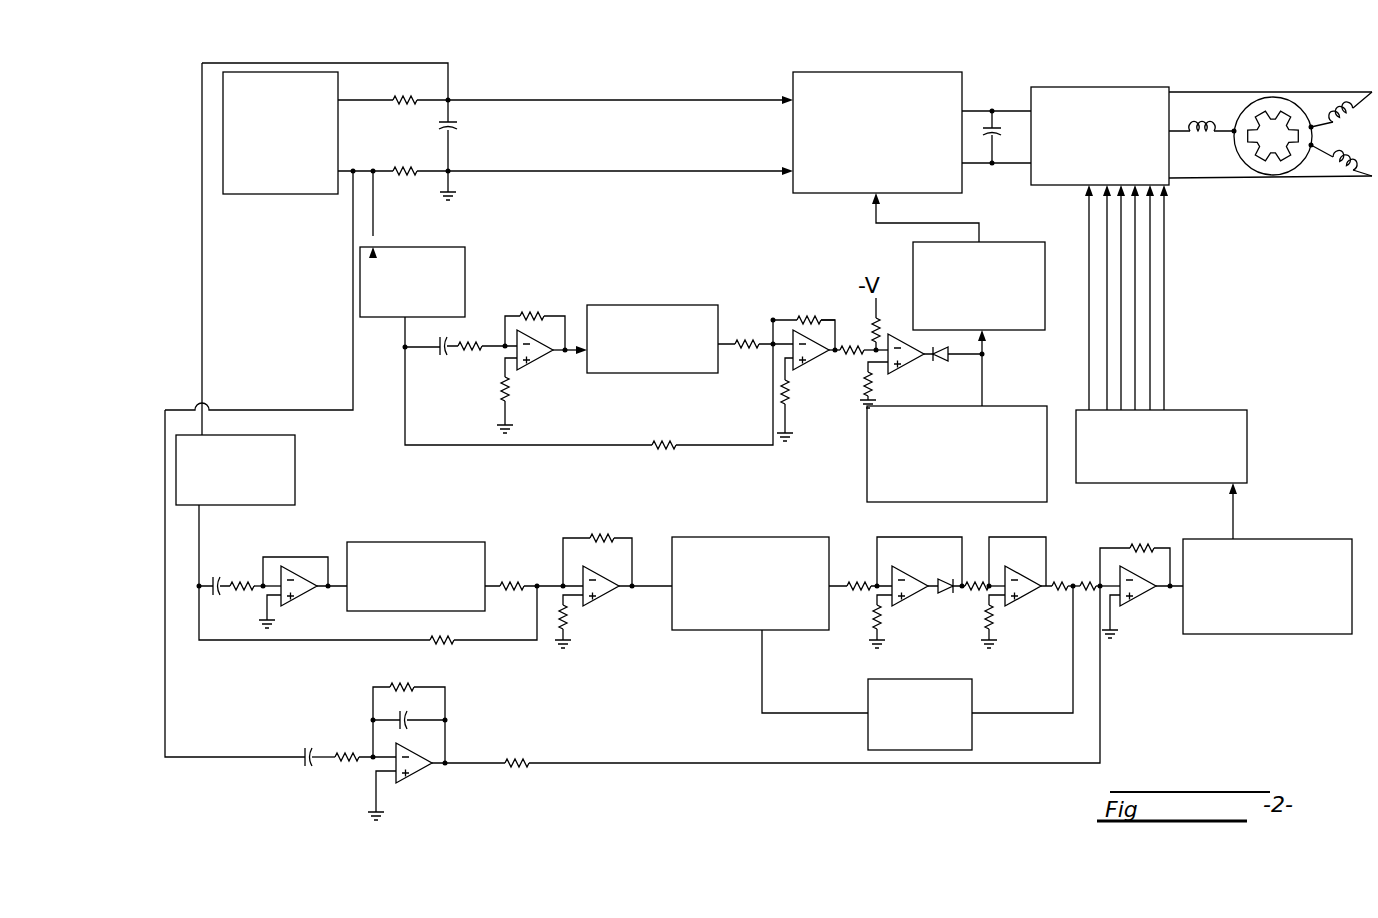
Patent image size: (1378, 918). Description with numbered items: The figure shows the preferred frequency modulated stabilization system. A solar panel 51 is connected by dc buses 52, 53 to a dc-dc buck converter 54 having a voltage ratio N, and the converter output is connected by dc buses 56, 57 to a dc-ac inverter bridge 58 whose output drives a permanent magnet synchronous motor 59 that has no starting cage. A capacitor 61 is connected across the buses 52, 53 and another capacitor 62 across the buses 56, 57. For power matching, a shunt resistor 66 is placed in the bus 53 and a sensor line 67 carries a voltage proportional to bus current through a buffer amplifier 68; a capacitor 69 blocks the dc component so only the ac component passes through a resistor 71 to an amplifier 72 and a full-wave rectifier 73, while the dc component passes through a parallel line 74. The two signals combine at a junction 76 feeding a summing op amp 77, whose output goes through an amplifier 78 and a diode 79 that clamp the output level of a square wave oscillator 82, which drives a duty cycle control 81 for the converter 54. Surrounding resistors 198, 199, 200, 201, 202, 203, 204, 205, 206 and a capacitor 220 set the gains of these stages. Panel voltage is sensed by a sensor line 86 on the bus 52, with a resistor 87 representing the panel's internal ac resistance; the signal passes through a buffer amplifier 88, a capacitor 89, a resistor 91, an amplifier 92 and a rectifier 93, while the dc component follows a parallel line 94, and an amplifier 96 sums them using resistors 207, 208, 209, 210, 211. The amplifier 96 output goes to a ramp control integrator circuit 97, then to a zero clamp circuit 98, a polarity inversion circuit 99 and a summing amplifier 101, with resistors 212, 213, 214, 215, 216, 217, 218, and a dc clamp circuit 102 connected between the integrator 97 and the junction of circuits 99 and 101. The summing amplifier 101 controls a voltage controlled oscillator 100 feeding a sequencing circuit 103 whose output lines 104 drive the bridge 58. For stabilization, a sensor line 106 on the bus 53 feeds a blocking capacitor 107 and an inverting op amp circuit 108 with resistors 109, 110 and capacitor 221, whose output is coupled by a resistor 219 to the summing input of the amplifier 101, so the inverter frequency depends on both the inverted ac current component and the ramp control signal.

The solar panel 51 is at (223, 130).
The dc bus 52 is at (488, 100).
The dc bus 53 is at (520, 171).
The dc-dc buck converter 54 is at (793, 86).
The dc bus 56 is at (1005, 111).
The dc bus 57 is at (1008, 163).
The dc-ac inverter bridge 58 is at (1120, 87).
The permanent magnet synchronous motor 59 is at (1276, 180).
The capacitor 61 is at (460, 132).
The capacitor 62 is at (980, 128).
The shunt resistor 66 is at (410, 167).
The sensor line 67 is at (376, 215).
The buffer amplifier 68 is at (465, 262).
The capacitor 69 is at (437, 348).
The resistor 71 is at (452, 356).
The amplifier 72 is at (535, 340).
The full-wave rectifier 73 is at (628, 305).
The parallel line 74 is at (520, 445).
The junction 76 is at (773, 346).
The summing op amp 77 is at (800, 332).
The amplifier 78 is at (900, 368).
The diode 79 is at (940, 362).
The duty cycle control 81 is at (1010, 331).
The square wave oscillator 82 is at (1003, 406).
The sensor line 86 is at (203, 247).
The resistor 87 is at (400, 97).
The buffer amplifier 88 is at (243, 435).
The capacitor 89 is at (215, 583).
The resistor 91 is at (245, 583).
The amplifier 92 is at (296, 565).
The rectifier 93 is at (412, 542).
The parallel line 94 is at (330, 640).
The amplifier 96 is at (600, 565).
The ramp control integrator circuit 97 is at (727, 537).
The zero clamp circuit 98 is at (912, 565).
The polarity inversion circuit 99 is at (1018, 565).
The voltage controlled oscillator 100 is at (1290, 539).
The summing amplifier 101 is at (1135, 612).
The dc clamp circuit 102 is at (868, 733).
The sequencing circuit 103 is at (1240, 410).
The output lines 104 is at (1160, 245).
The sensor line 106 is at (165, 722).
The blocking capacitor 107 is at (306, 770).
The inverting op amp circuit 108 is at (418, 780).
The resistor 109 is at (348, 762).
The resistor 110 is at (420, 688).
The resistor 198 is at (890, 318).
The resistor 199 is at (866, 395).
The resistor 200 is at (503, 392).
The resistor 201 is at (527, 312).
The resistor 202 is at (738, 338).
The resistor 203 is at (808, 313).
The resistor 204 is at (785, 400).
The resistor 205 is at (665, 440).
The resistor 206 is at (850, 352).
The resistor 207 is at (265, 607).
The resistor 208 is at (462, 645).
The resistor 209 is at (510, 583).
The resistor 210 is at (575, 637).
The resistor 211 is at (600, 538).
The resistor 212 is at (860, 583).
The resistor 213 is at (870, 618).
The resistor 214 is at (968, 592).
The resistor 215 is at (990, 620).
The resistor 216 is at (1062, 592).
The resistor 217 is at (1088, 583).
The resistor 218 is at (1140, 548).
The resistor 219 is at (525, 757).
The capacitor 220 is at (800, 308).
The capacitor 221 is at (425, 718).